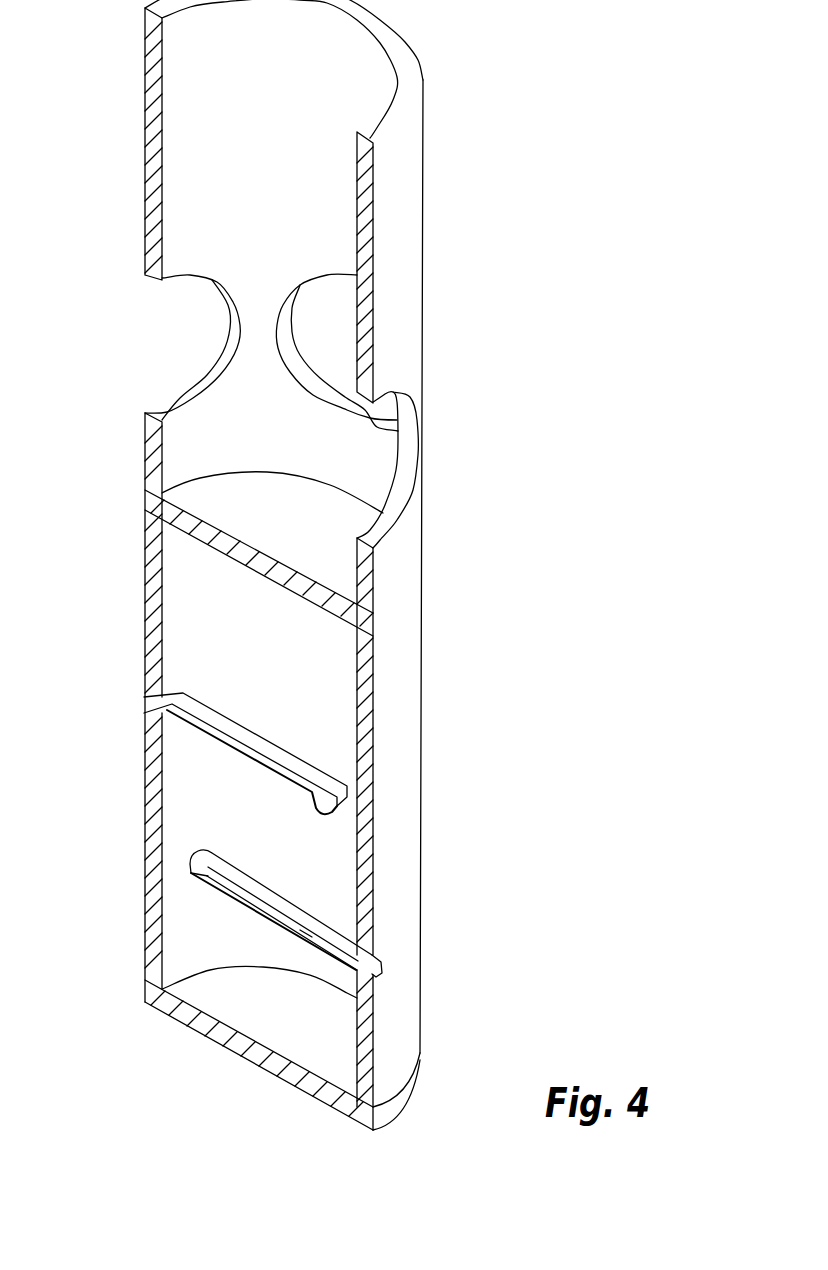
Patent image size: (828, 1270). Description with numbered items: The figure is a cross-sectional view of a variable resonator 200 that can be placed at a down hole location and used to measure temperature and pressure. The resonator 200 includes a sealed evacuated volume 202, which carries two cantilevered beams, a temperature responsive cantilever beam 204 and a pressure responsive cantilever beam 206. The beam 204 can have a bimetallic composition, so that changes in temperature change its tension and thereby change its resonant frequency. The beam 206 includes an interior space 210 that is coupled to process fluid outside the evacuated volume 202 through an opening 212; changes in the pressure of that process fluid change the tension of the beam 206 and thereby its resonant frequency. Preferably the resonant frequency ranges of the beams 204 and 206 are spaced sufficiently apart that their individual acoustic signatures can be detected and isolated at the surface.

The variable resonator 200 is at (372, 565).
The sealed evacuated volume 202 is at (313, 683).
The temperature responsive cantilever beam 204 is at (213, 722).
The pressure responsive cantilever beam 206 is at (280, 890).
The interior space 210 is at (307, 937).
The opening 212 is at (382, 968).